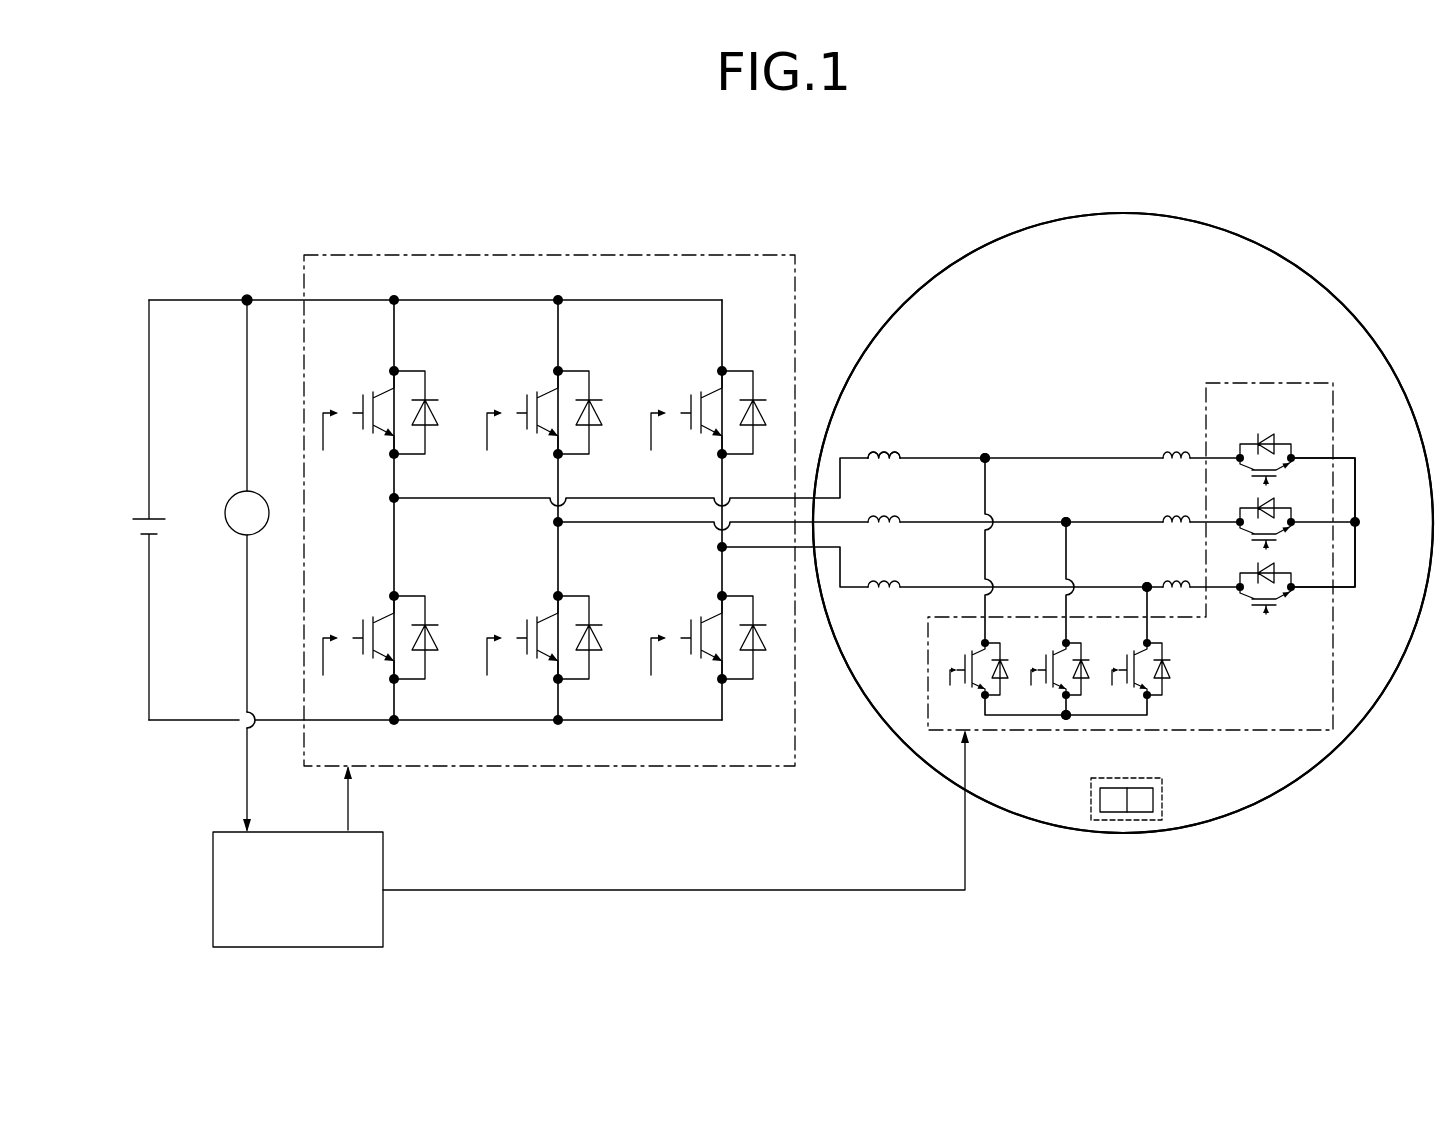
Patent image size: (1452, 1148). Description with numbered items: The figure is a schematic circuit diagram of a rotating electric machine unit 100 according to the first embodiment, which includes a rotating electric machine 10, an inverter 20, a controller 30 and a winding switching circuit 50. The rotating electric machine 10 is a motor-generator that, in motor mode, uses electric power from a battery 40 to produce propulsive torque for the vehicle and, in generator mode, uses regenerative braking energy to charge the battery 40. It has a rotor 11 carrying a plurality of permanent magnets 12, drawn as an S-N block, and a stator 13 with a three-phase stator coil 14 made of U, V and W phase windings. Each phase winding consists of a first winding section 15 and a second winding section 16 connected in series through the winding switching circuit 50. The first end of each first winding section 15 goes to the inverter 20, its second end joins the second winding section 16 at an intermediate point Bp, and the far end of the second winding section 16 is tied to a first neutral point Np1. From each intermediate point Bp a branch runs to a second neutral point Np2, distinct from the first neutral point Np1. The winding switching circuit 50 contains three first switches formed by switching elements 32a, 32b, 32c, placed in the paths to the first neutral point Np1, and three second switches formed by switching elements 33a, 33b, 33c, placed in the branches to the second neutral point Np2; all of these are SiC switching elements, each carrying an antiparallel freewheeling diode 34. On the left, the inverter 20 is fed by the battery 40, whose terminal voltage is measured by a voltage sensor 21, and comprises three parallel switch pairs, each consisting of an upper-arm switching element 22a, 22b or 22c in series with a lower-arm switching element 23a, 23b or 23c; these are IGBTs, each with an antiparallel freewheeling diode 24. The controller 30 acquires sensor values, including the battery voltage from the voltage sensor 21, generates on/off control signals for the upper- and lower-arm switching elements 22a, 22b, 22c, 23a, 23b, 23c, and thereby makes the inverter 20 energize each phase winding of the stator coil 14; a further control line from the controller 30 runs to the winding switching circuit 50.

The rotating electric machine unit 100 is at (975, 173).
The rotating electric machine 10 is at (1327, 270).
The rotor 11 is at (1163, 806).
The permanent magnets 12 is at (1140, 813).
The stator 13 is at (1352, 437).
The stator coil 14 is at (871, 495).
The first winding section 15 is at (886, 452).
The second winding section 16 is at (1168, 452).
The inverter 20 is at (795, 280).
The voltage sensor 21 is at (263, 494).
The switching element 22a is at (392, 388).
The switching element 22b is at (556, 388).
The switching element 22c is at (720, 388).
The switching element 23a is at (392, 603).
The switching element 23b is at (556, 603).
The switching element 23c is at (720, 603).
The freewheeling diode 24 is at (752, 608).
The controller 30 is at (383, 922).
The switching element 32a is at (1252, 470).
The switching element 32b is at (1252, 534).
The switching element 32c is at (1252, 600).
The switching element 33a is at (970, 664).
The switching element 33b is at (1051, 664).
The switching element 33c is at (1132, 664).
The freewheeling diode 34 is at (1151, 553).
The battery 40 is at (155, 517).
The winding switching circuit 50 is at (1220, 383).
The intermediate point Bp is at (1146, 585).
The first neutral point Np1 is at (1358, 520).
The second neutral point Np2 is at (1066, 718).